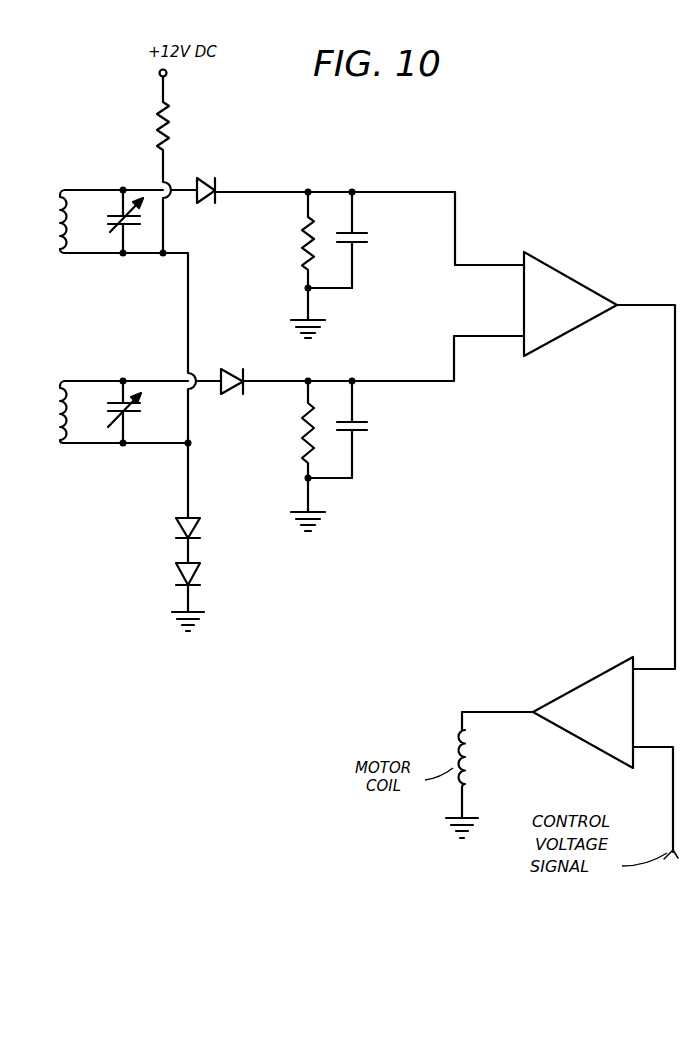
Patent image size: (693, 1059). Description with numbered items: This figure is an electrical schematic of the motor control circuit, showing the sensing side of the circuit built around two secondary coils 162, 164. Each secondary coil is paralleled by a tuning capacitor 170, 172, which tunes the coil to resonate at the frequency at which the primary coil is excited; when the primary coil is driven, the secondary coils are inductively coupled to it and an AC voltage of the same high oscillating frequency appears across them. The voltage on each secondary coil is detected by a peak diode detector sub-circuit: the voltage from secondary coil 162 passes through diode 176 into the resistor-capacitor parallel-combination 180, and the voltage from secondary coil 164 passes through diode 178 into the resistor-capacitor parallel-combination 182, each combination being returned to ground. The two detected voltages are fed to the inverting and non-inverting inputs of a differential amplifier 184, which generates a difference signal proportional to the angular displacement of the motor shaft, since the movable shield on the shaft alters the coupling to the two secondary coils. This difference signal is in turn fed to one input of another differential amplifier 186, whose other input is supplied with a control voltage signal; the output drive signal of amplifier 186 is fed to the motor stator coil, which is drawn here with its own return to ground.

The secondary coil 162 is at (58, 220).
The secondary coil 164 is at (58, 395).
The tuning capacitor 170 is at (116, 214).
The tuning capacitor 172 is at (109, 404).
The diode 176 is at (205, 203).
The diode 178 is at (232, 395).
The resistor-capacitor parallel-combination 180 is at (374, 240).
The resistor-capacitor parallel-combination 182 is at (371, 425).
The differential amplifier 184 is at (524, 356).
The differential amplifier 186 is at (564, 695).